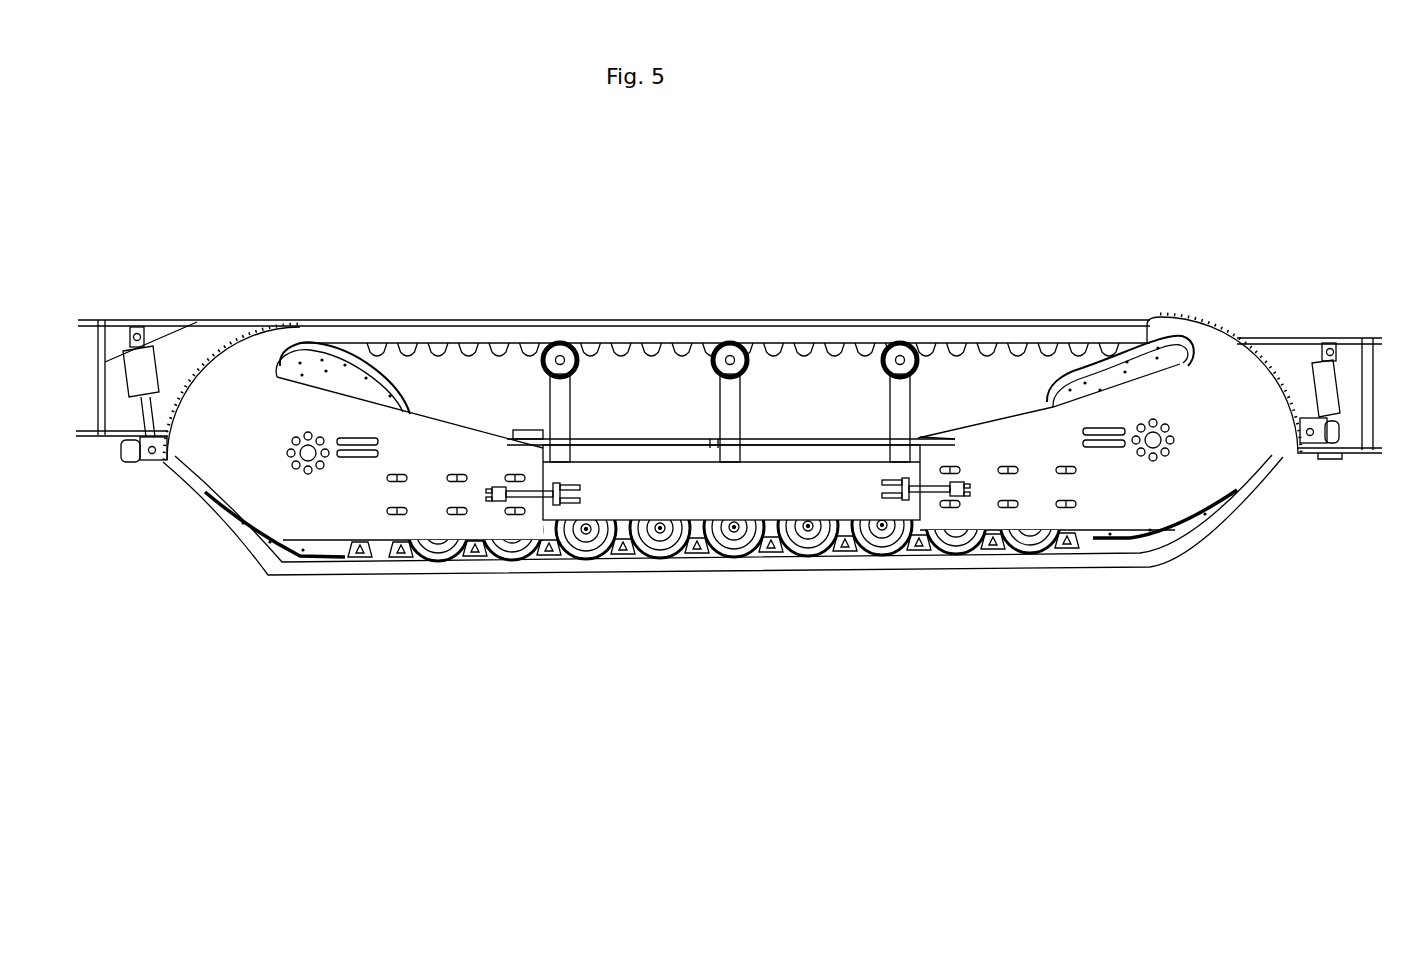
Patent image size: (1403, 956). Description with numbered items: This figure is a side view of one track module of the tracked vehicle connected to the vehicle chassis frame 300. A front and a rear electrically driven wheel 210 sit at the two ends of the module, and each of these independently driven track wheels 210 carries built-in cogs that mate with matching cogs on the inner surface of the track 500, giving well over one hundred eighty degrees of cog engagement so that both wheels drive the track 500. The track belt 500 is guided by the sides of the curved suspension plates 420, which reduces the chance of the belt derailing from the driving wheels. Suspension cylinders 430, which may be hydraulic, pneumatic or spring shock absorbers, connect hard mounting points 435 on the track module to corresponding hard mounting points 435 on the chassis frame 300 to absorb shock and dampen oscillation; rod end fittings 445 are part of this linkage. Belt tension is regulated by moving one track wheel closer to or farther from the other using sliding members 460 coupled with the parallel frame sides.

The vehicle chassis frame 300 is at (158, 325).
The electrically driven wheels 210 is at (325, 378).
The curved suspension plate 420 is at (1203, 385).
The suspension cylinders 430 is at (145, 378).
The hard mounting points 435 is at (142, 456).
The rod end fittings 445 is at (947, 417).
The sliding members 460 is at (536, 503).
The track 500 is at (886, 333).